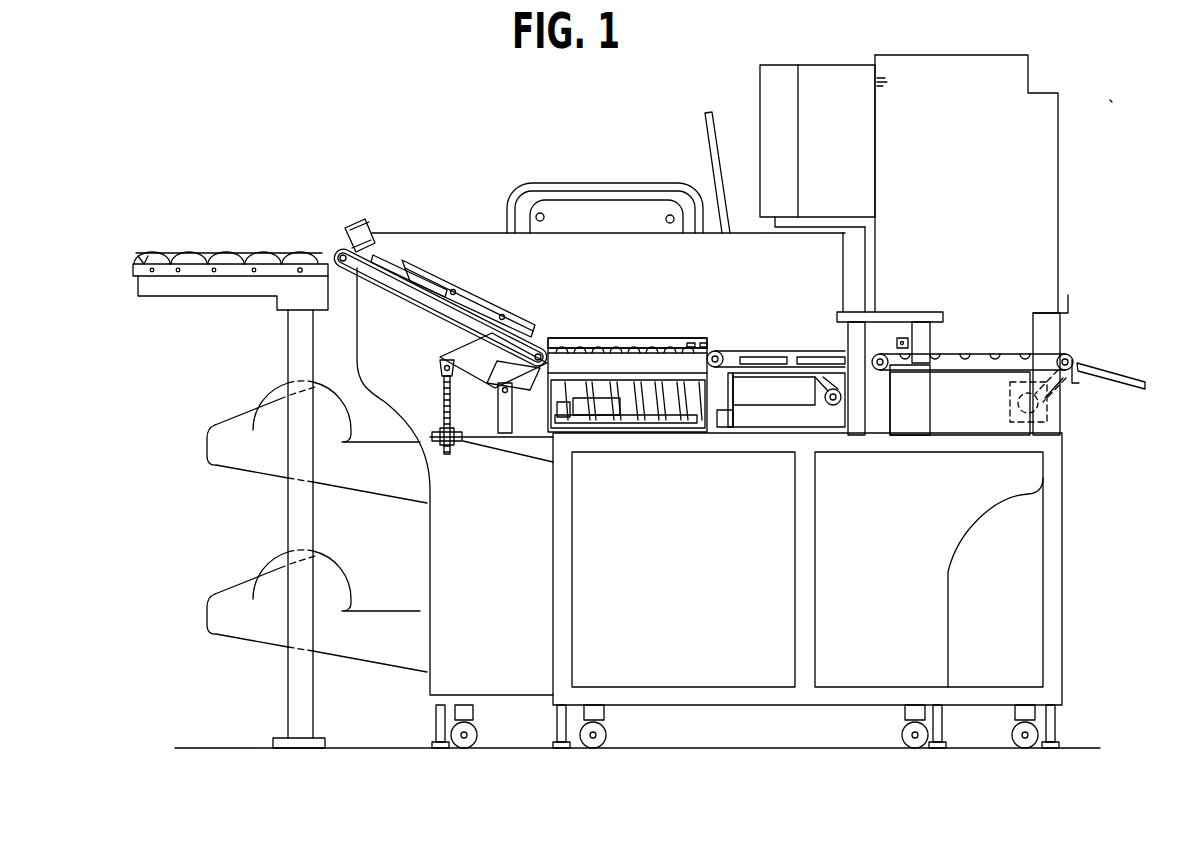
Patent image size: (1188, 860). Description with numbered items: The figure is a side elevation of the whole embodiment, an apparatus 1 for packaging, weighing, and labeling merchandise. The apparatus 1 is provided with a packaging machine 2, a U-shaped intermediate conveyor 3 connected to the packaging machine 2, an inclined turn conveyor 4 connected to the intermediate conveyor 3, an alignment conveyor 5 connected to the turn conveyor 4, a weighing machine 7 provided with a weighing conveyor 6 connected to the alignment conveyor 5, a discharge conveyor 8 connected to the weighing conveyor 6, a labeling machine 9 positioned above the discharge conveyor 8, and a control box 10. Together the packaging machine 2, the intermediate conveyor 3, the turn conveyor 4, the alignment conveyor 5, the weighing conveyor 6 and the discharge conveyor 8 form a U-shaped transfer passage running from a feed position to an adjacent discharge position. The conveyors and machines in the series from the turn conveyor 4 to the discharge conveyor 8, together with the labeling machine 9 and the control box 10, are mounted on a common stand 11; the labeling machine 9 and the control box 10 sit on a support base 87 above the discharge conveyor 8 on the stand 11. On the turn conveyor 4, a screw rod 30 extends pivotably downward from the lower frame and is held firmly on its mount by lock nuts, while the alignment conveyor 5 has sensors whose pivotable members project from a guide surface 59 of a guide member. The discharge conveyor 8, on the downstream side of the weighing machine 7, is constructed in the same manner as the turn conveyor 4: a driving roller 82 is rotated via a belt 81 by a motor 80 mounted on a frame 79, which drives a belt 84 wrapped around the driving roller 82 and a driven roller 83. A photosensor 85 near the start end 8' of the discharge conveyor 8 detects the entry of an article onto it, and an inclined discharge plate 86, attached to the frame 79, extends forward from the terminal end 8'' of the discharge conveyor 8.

The apparatus 1 is at (1117, 100).
The packaging machine 2 is at (455, 247).
The U-shaped intermediate conveyor 3 is at (205, 257).
The inclined turn conveyor 4 is at (404, 313).
The alignment conveyor 5 is at (647, 345).
The weighing conveyor 6 is at (750, 353).
The weighing machine 7 is at (758, 435).
The discharge conveyor 8 is at (1023, 377).
The start end 8' is at (889, 338).
The terminal end 8'' is at (1078, 355).
The labeling machine 9 is at (942, 78).
The control box 10 is at (830, 87).
The common stand 11 is at (1054, 553).
The screw rod 30 is at (347, 229).
The guide surface 59 is at (593, 345).
The frame 79 is at (972, 369).
The motor 80 is at (1023, 421).
The belt 81 is at (1061, 381).
The driving roller 82 is at (1078, 367).
The driven roller 83 is at (880, 370).
The belt 84 is at (990, 350).
The photosensor 85 is at (903, 338).
The inclined discharge plate 86 is at (1118, 368).
The support base 87 is at (852, 315).